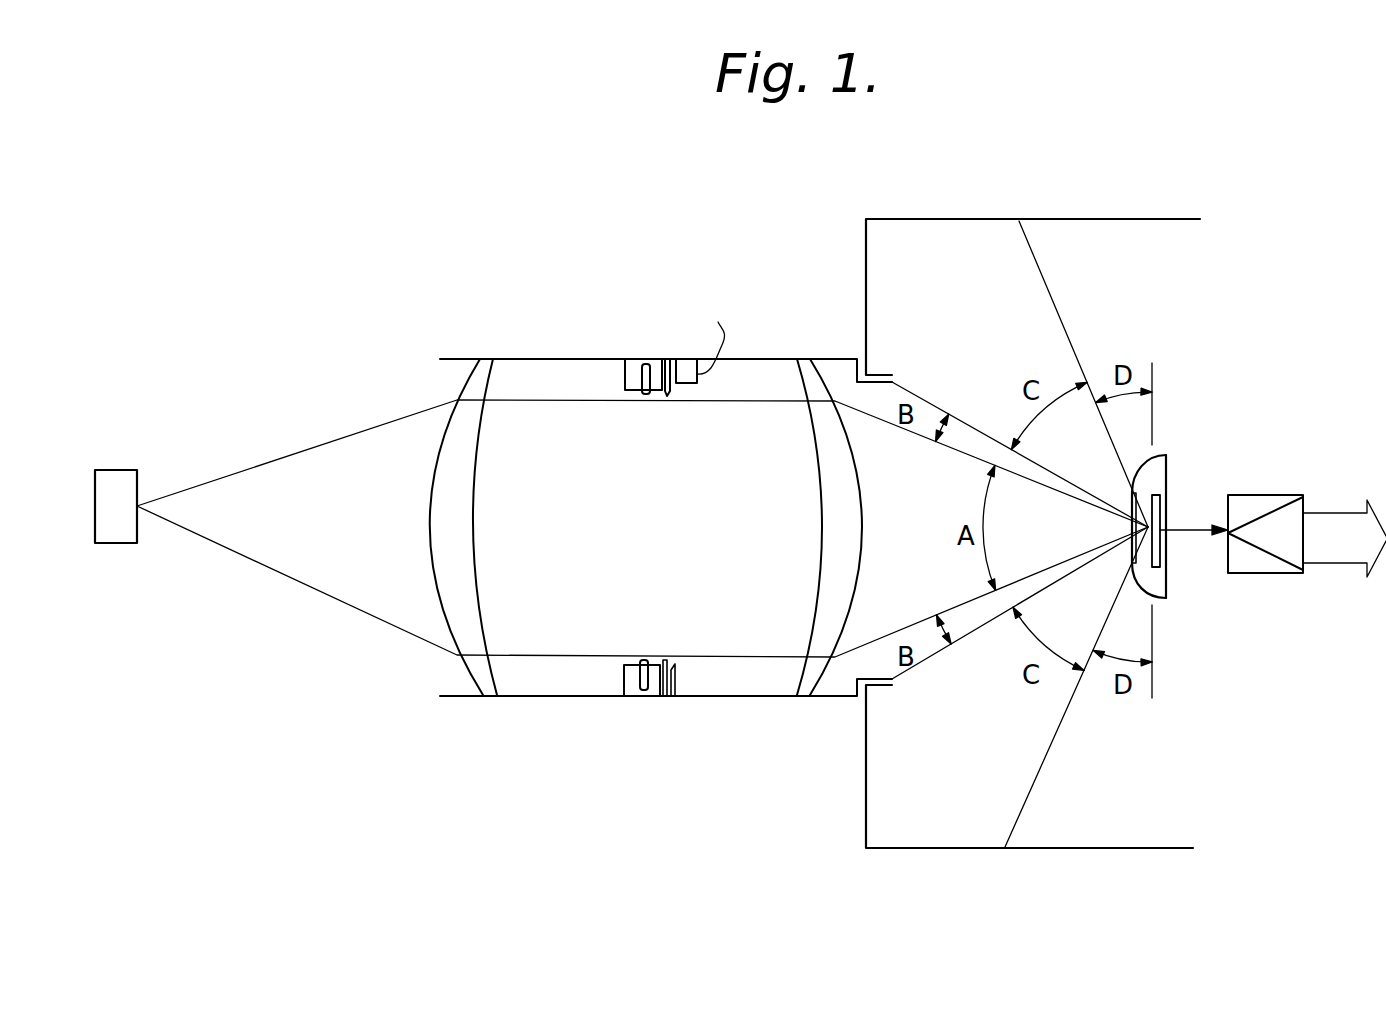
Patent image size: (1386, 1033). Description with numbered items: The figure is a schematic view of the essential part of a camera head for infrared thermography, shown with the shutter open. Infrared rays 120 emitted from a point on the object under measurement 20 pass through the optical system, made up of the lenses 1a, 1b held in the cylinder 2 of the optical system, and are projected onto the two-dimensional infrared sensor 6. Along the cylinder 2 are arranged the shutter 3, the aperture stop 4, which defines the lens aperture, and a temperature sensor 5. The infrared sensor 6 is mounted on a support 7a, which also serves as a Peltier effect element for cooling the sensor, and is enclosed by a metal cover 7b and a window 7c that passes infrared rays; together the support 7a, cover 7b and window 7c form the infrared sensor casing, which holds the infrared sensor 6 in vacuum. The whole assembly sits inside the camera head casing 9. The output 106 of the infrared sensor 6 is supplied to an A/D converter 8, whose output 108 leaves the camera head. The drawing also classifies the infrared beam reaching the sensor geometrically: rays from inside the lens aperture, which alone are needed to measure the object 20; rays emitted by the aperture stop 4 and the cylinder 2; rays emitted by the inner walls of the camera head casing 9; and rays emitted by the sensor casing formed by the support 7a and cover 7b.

The lens 1a is at (428, 506).
The lens 1b is at (816, 464).
The cylinder of an optical system 2 is at (580, 698).
The shutter 3 is at (645, 396).
The aperture stop 4 is at (670, 397).
The temperature sensor 5 is at (687, 365).
The two-dimensional infrared sensor 6 is at (1158, 500).
The support 7a is at (1160, 582).
The metal cover 7b is at (1138, 592).
The window 7c is at (1128, 500).
The A/D converter 8 is at (1276, 495).
The camera head casing 9 is at (968, 848).
The object under measurement 20 is at (122, 470).
The output of the infrared sensor 106 is at (1200, 520).
The output of the A/D converter 108 is at (1340, 565).
The infrared rays 120 is at (318, 442).